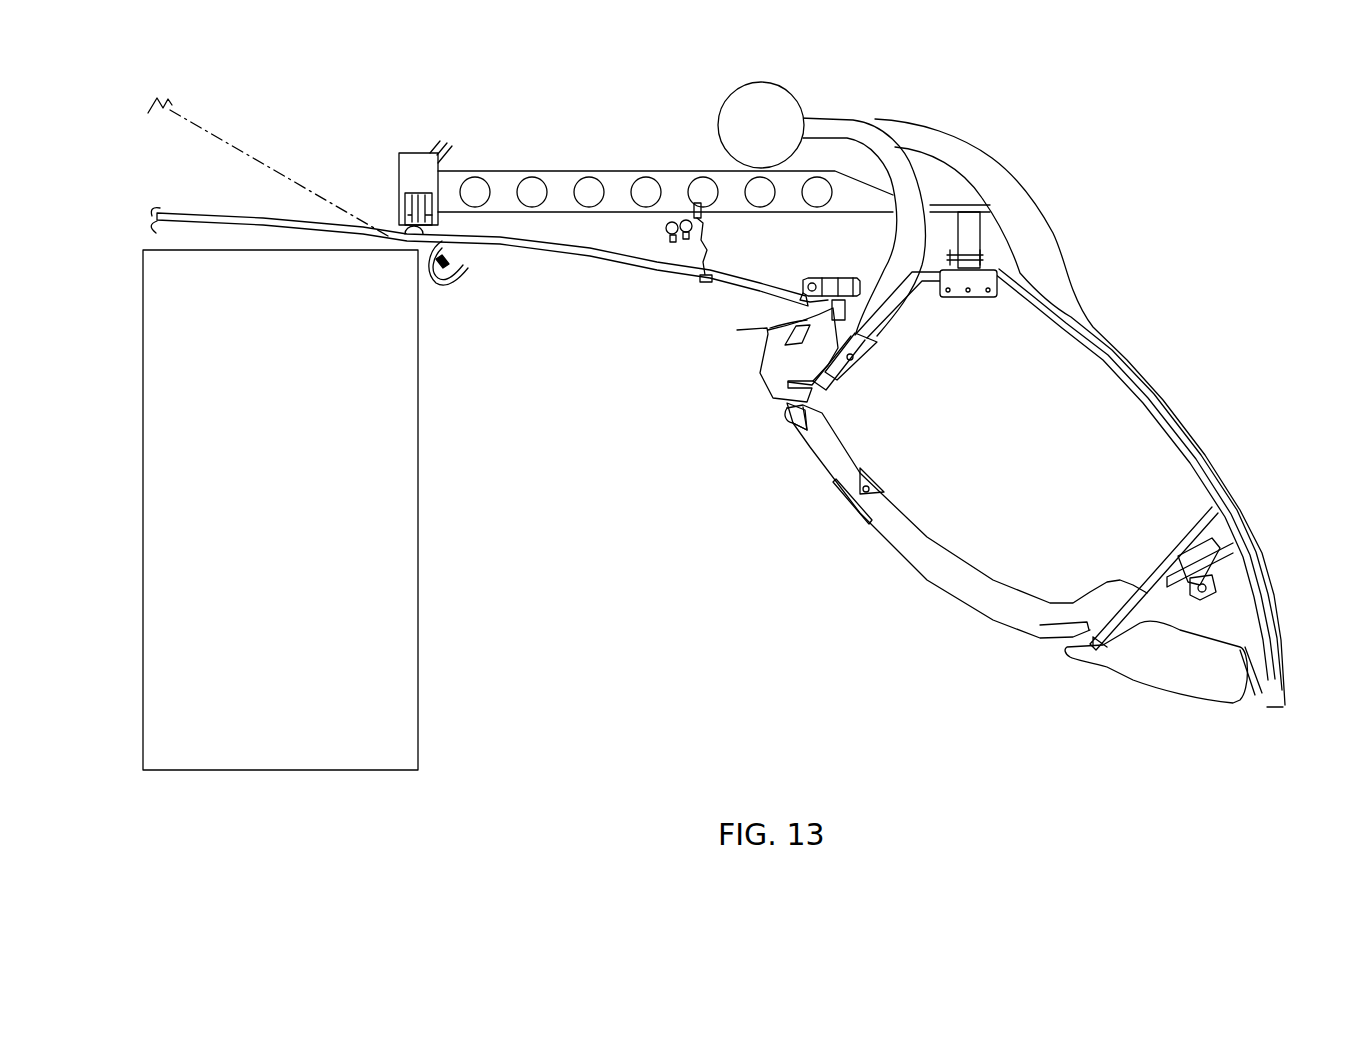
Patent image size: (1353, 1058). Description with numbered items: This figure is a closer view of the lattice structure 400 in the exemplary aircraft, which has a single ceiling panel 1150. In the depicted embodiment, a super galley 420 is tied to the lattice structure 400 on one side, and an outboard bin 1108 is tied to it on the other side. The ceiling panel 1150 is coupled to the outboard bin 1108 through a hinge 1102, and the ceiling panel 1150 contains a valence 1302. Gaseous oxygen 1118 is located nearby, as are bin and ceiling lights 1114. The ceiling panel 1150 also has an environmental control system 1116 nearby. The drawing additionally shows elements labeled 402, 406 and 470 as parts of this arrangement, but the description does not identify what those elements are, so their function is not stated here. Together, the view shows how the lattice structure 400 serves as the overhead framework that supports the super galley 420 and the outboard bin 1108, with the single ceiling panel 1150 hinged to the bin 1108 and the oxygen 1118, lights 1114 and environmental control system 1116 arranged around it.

The lattice structure 400 is at (599, 111).
The mounting box 402 is at (418, 163).
The perforated beam 406 is at (507, 178).
The gaseous oxygen 1118 is at (672, 210).
The environmental control system 1116 is at (778, 90).
The hinge 1102 is at (818, 278).
The bracket 470 is at (980, 233).
The outboard bin 1108 is at (1045, 345).
The ceiling panel 1150 is at (568, 250).
The valence 1302 is at (453, 277).
The bin and ceiling lights 1114 is at (827, 310).
The super galley 420 is at (418, 565).